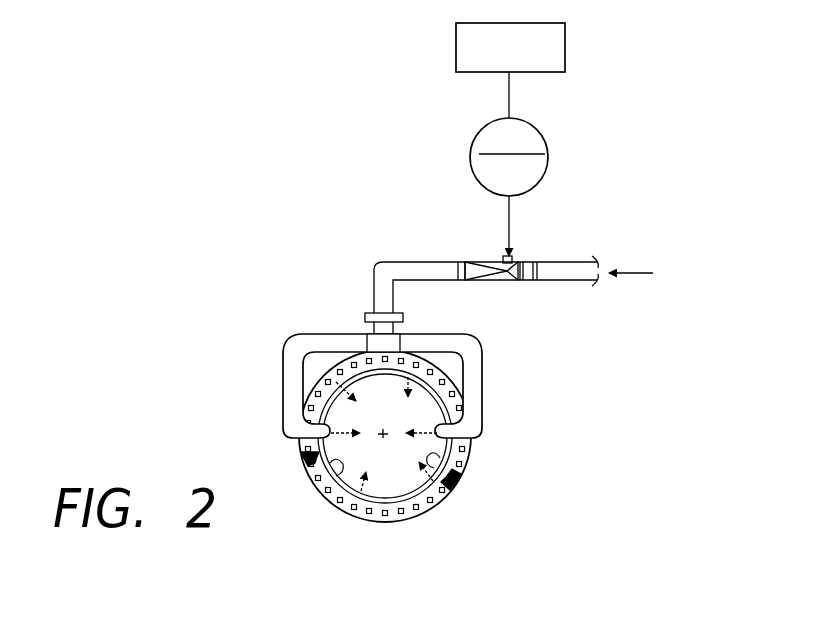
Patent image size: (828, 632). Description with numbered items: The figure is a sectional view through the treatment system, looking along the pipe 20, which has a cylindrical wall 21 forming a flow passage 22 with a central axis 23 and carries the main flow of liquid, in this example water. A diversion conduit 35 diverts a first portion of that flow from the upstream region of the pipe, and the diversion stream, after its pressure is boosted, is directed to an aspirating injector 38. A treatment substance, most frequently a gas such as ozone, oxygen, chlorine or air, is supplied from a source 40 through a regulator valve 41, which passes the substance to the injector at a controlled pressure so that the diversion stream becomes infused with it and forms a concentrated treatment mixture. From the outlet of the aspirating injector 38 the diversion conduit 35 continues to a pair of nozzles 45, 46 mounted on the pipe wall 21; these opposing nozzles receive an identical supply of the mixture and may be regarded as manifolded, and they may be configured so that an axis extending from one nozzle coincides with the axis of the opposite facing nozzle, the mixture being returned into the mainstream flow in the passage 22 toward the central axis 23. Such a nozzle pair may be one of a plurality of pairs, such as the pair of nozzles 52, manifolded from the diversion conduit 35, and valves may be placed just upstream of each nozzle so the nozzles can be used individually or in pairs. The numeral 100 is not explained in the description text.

The source 40 is at (567, 50).
The regulator valve 41 is at (546, 132).
The aspirating injector 38 is at (466, 258).
The diversion conduit 35 is at (569, 262).
The pair of nozzles 52 is at (322, 331).
The pipe 20 is at (458, 499).
The cylindrical wall 21 is at (328, 503).
The flow passage 22 is at (404, 481).
The central axis 23 is at (384, 428).
The nozzle 45 is at (296, 470).
The nozzle 46 is at (463, 478).
The particles 100 is at (320, 422).